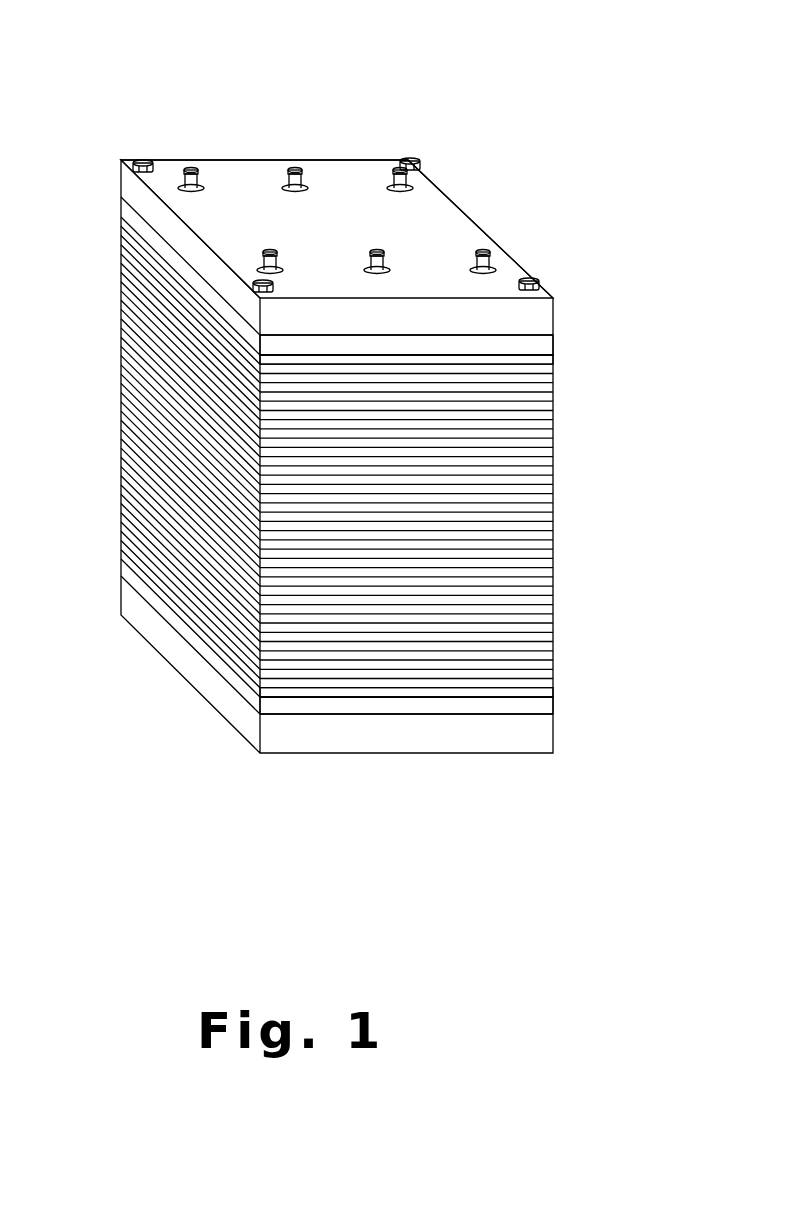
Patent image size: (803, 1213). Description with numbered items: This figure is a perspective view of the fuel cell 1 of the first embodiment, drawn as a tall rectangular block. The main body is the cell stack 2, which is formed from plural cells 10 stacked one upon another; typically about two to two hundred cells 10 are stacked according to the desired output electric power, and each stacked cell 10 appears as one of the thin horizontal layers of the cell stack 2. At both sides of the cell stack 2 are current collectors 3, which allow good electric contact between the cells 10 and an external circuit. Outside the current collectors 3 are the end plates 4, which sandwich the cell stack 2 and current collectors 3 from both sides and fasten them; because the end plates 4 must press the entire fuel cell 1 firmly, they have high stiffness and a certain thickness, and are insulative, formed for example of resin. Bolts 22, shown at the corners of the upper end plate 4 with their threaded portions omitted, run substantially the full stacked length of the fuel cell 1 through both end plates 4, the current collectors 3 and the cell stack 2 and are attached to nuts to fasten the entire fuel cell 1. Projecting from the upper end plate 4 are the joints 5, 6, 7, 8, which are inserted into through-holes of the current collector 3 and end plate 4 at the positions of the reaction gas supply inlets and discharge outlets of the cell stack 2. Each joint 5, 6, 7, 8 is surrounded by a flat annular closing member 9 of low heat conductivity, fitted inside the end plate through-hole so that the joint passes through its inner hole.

The fuel cell 1 is at (453, 96).
The cell stack 2 is at (118, 223).
The current collector 3 is at (547, 345).
The end plate 4 is at (241, 188).
The joint 5 is at (183, 170).
The joint 6 is at (276, 252).
The joint 7 is at (497, 275).
The joint 8 is at (293, 170).
The closing member 9 is at (412, 183).
The cell 10 is at (558, 365).
The bolt 22 is at (538, 280).